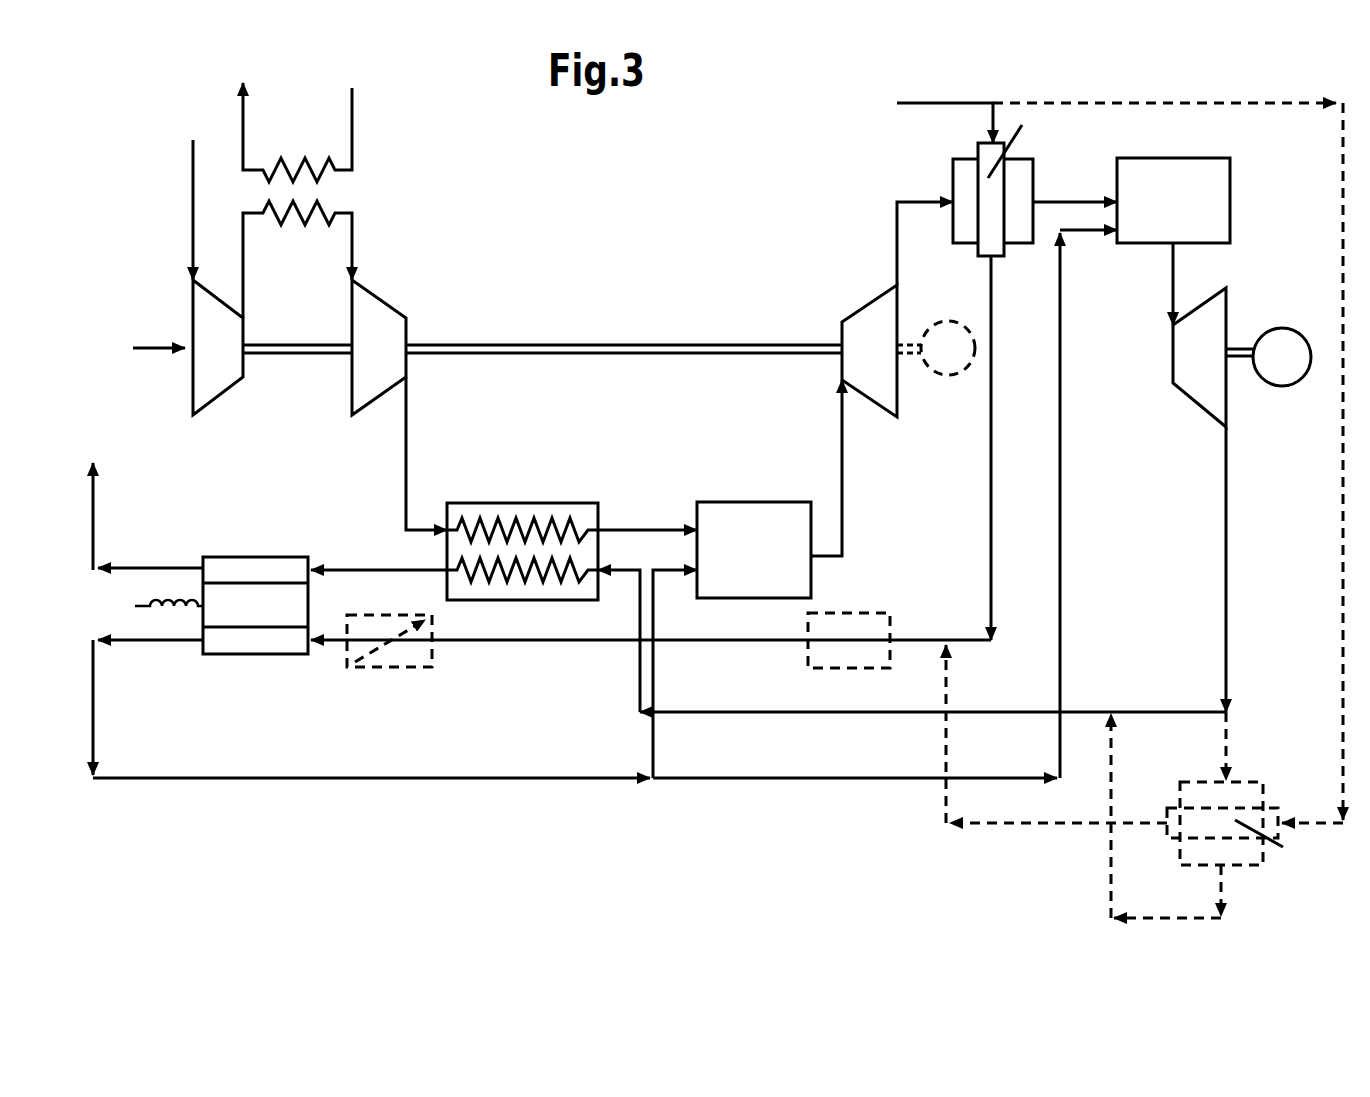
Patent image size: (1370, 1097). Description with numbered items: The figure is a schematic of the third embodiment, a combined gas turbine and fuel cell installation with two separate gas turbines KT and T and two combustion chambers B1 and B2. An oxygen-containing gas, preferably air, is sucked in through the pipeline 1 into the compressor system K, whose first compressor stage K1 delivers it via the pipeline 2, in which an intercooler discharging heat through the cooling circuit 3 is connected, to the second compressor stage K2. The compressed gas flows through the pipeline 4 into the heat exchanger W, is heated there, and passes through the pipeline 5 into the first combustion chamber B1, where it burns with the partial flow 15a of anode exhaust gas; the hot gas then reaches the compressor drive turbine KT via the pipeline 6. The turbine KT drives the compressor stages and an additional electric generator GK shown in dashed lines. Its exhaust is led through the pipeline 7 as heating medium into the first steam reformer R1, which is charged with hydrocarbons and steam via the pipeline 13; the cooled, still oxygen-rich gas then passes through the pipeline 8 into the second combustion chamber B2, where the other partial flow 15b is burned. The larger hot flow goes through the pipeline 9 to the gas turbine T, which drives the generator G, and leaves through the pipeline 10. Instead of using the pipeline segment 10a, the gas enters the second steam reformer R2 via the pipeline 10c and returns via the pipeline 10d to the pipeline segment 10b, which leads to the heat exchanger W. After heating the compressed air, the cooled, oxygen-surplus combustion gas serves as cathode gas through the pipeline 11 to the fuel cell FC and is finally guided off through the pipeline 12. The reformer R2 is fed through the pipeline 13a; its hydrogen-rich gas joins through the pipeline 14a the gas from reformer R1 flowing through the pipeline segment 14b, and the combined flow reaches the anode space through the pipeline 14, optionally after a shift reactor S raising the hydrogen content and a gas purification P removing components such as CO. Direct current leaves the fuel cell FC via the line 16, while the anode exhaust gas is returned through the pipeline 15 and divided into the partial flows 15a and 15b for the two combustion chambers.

The pipeline 1 is at (182, 210).
The pipeline 2 is at (297, 259).
The cooling circuit 3 is at (308, 132).
The pipeline 4 is at (414, 453).
The pipeline 5 is at (647, 510).
The pipeline 6 is at (834, 468).
The pipeline 7 is at (915, 243).
The pipeline 8 is at (1075, 188).
The pipeline 9 is at (1182, 284).
The pipeline 10 is at (1240, 569).
The pipeline segment 10a is at (912, 642).
The pipeline segment 10b is at (941, 794).
The pipeline 10c is at (1253, 747).
The pipeline 10d is at (1167, 894).
The pipeline 11 is at (379, 590).
The pipeline 12 is at (131, 516).
The pipeline 13 is at (945, 124).
The pipeline 13a is at (1168, 463).
The pipeline 14 is at (1004, 448).
The pipeline 14a is at (1056, 735).
The pipeline segment 14b is at (651, 660).
The pipeline 15 is at (371, 730).
The partial flow 15a is at (676, 674).
The partial flow 15b is at (885, 525).
The line 16 is at (153, 606).
The compressor system K is at (159, 335).
The first compressor stage K1 is at (218, 347).
The second compressor stage K2 is at (379, 347).
The compressor drive turbine KT is at (869, 351).
The additional electric generator GK is at (936, 369).
The gas turbine T is at (1199, 357).
The generator G is at (1273, 373).
The heat exchanger W is at (522, 534).
The first combustion chamber B1 is at (754, 550).
The second combustion chamber B2 is at (1173, 200).
The first steam reformer R1 is at (1006, 183).
The second steam reformer R2 is at (1246, 827).
The fuel cell FC is at (255, 605).
The gas purification P is at (389, 661).
The reactor S is at (849, 660).